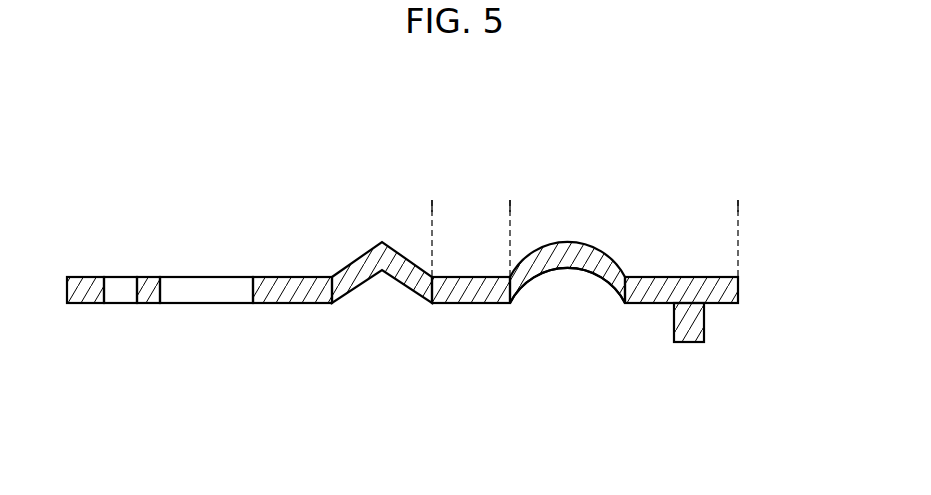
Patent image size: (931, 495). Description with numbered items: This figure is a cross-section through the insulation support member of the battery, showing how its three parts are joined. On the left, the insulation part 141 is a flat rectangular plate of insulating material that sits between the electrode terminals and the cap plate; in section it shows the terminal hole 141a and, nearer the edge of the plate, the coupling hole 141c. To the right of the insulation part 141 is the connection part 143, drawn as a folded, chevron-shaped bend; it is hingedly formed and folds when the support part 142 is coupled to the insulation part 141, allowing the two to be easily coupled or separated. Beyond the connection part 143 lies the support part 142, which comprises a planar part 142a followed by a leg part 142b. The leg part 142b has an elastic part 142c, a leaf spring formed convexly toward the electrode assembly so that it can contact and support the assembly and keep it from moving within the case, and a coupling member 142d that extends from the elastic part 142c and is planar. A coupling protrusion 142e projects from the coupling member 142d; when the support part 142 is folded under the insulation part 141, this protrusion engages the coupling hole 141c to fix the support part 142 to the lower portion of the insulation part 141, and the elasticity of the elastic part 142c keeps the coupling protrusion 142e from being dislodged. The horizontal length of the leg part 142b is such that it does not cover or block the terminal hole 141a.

The insulation part 141 is at (332, 277).
The terminal hole 141a is at (213, 290).
The coupling hole 141c is at (122, 290).
The support part 142 is at (652, 166).
The planar part 142a is at (510, 206).
The leg part 142b is at (738, 206).
The elastic part 142c is at (566, 269).
The coupling member 142d is at (729, 294).
The coupling protrusion 142e is at (690, 323).
The connection part 143 is at (368, 252).